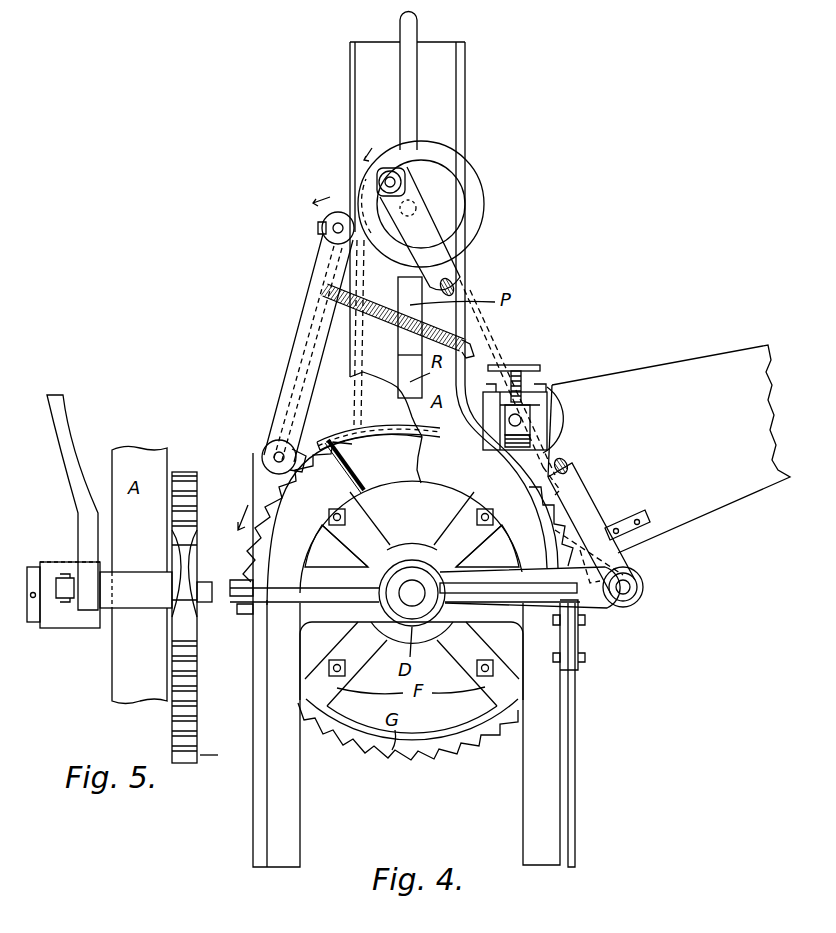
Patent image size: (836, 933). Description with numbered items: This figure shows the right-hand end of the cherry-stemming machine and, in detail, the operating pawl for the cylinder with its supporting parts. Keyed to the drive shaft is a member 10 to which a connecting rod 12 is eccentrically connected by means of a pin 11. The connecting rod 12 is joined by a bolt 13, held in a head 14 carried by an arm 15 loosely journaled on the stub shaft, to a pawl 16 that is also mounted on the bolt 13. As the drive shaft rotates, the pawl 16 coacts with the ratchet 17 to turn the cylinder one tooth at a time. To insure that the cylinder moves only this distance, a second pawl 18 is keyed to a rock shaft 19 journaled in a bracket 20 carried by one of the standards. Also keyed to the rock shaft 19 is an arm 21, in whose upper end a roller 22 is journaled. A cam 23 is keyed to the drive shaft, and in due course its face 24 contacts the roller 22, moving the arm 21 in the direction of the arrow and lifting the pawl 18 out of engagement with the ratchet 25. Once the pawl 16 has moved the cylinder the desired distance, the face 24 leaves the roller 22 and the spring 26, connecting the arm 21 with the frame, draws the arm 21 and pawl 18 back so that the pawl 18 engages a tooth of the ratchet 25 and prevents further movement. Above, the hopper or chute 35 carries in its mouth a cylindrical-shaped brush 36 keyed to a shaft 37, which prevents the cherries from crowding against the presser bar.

In FIG. 4, the member 10 is at (443, 211).
In FIG. 4, the pin 11 is at (378, 188).
In FIG. 4, the connecting rod 12 is at (440, 258).
In FIG. 5, the connecting rod 12 is at (73, 457).
In FIG. 4, the bolt 13 is at (643, 581).
In FIG. 5, the bolt 13 is at (42, 577).
In FIG. 5, the head 14 is at (120, 603).
In FIG. 4, the arm 15 is at (498, 600).
In FIG. 5, the arm 15 is at (60, 567).
In FIG. 4, the pawl 16 is at (570, 535).
In FIG. 5, the pawl 16 is at (182, 547).
In FIG. 4, the ratchet 17 is at (478, 742).
In FIG. 5, the ratchet 17 is at (183, 640).
In FIG. 4, the pawl 18 is at (322, 428).
In FIG. 4, the rock shaft 19 is at (265, 456).
In FIG. 4, the bracket 20 is at (270, 472).
In FIG. 4, the arm 21 is at (312, 318).
In FIG. 4, the roller 22 is at (316, 226).
In FIG. 4, the cam 23 is at (440, 151).
In FIG. 4, the face 24 is at (478, 182).
In FIG. 4, the ratchet 25 is at (385, 435).
In FIG. 4, the spring 26 is at (352, 310).
In FIG. 4, the hopper or chute 35 is at (669, 449).
In FIG. 4, the cylindrical-shaped brush 36 is at (528, 408).
In FIG. 4, the shaft 37 is at (520, 423).